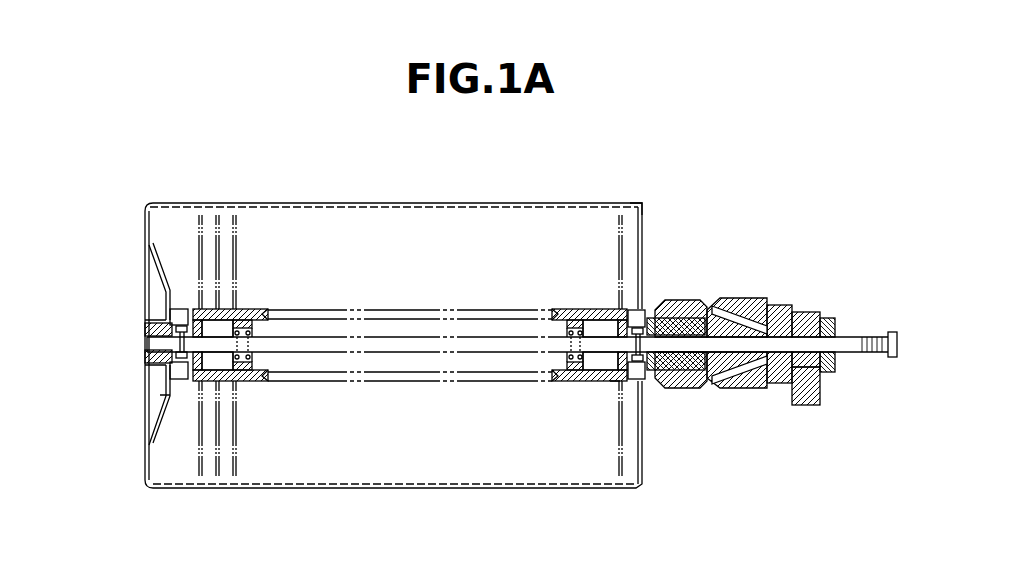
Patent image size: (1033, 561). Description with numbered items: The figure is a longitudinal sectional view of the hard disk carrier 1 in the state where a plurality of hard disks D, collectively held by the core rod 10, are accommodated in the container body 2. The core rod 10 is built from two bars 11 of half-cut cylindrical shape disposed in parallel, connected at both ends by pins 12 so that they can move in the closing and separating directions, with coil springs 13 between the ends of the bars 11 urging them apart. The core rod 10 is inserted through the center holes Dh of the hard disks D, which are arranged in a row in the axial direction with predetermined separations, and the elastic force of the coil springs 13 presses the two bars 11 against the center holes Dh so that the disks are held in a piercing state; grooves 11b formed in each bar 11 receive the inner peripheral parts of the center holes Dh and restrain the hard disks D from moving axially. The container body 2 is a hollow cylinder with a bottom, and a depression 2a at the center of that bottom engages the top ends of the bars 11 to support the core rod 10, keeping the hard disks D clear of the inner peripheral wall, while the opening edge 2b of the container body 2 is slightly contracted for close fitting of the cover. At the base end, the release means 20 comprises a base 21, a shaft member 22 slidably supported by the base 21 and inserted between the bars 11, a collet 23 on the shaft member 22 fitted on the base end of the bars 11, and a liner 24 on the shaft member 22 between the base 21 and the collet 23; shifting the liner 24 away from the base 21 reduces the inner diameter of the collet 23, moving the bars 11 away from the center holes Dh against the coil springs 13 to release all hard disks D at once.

The hard disk carrier 1 is at (750, 185).
The container body 2 is at (421, 200).
The depression 2a is at (148, 332).
The opening edge 2b is at (642, 203).
The core rod 10 is at (427, 301).
The bar 11 is at (556, 306).
The groove 11b is at (183, 362).
The pin 12 is at (180, 308).
The coil spring 13 is at (250, 343).
The release means 20 is at (744, 284).
The base 21 is at (804, 405).
The shaft member 22 is at (862, 337).
The collet 23 is at (690, 388).
The liner 24 is at (797, 312).
The hard disk D is at (237, 262).
The center hole Dh is at (165, 395).